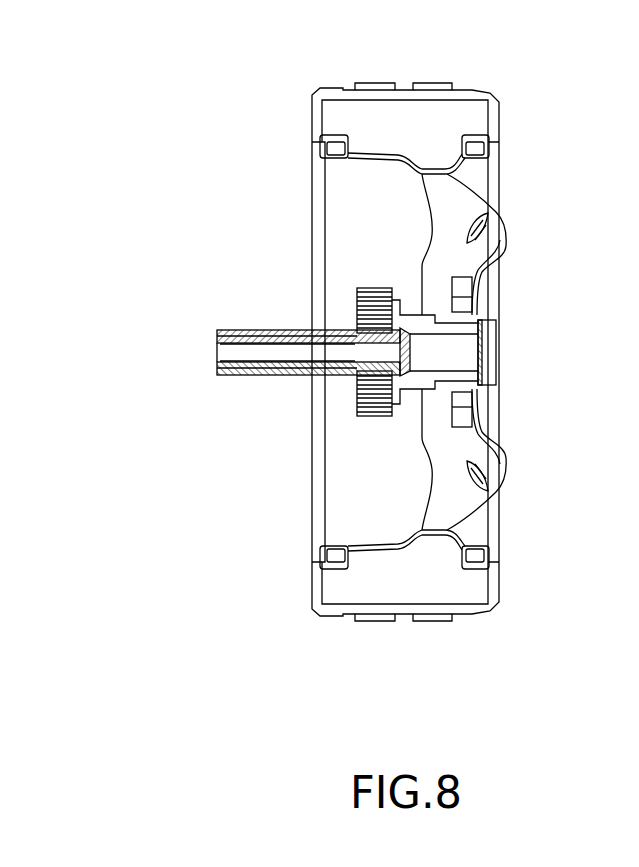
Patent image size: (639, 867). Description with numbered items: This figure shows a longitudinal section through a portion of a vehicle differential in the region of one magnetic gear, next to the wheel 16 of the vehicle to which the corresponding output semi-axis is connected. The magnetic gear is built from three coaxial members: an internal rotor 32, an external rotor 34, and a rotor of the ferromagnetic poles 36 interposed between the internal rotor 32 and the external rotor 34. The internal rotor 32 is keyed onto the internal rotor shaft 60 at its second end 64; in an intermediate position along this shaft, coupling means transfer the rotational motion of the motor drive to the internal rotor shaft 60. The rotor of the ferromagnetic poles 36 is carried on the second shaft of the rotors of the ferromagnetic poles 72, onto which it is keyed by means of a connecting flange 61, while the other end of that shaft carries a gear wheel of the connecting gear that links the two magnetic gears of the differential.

The wheel 16 is at (411, 630).
The internal rotor 32 is at (352, 329).
The external rotor 34 is at (357, 295).
The rotor of the ferromagnetic poles 36 is at (357, 312).
The internal rotor shaft 60 is at (217, 368).
The connecting flange 61 is at (355, 385).
The second end 64 is at (405, 350).
The second shaft of the rotor of the ferromagnetic poles 72 is at (237, 377).